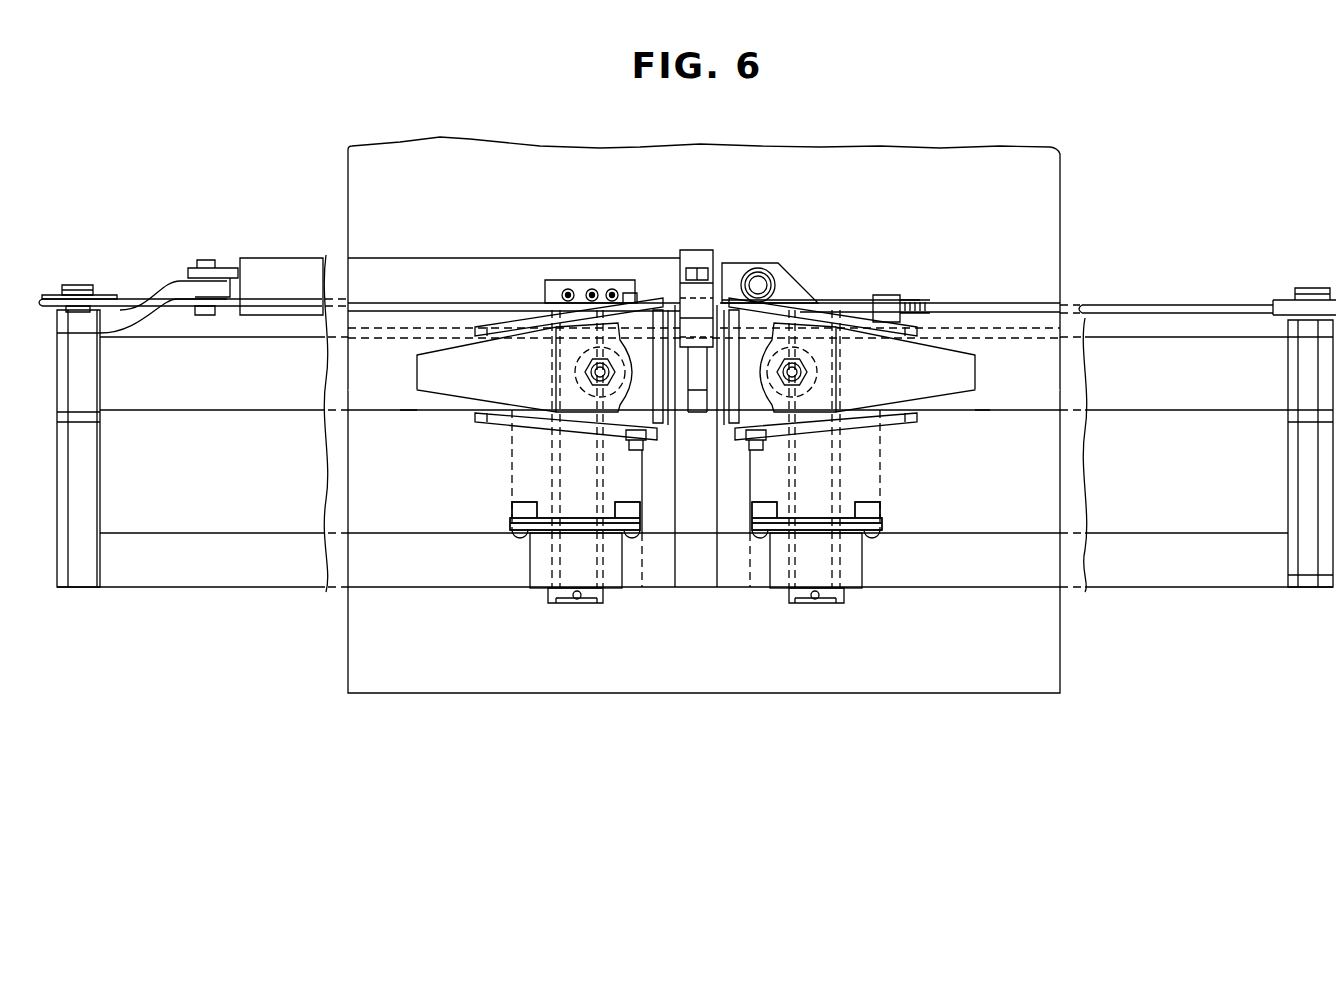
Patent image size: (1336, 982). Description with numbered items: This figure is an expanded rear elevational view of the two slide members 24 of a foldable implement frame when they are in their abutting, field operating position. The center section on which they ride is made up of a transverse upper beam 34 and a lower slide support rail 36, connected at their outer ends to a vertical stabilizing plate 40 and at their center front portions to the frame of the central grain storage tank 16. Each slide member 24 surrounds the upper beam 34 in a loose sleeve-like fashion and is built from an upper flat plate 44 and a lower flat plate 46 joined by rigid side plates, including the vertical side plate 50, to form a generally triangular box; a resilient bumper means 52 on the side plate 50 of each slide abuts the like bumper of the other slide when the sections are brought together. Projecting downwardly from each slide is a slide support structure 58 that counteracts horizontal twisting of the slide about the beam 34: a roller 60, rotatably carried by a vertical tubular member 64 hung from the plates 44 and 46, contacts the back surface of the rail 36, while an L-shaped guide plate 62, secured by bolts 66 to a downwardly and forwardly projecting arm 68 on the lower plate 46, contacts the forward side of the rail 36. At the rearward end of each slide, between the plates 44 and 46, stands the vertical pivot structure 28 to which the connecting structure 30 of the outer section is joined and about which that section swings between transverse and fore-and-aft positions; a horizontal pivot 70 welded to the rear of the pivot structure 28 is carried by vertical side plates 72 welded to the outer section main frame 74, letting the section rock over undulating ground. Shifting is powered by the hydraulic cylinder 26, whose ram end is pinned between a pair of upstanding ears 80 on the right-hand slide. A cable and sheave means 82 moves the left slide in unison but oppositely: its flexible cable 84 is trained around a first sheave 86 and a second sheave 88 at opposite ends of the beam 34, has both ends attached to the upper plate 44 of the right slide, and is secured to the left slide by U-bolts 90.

The central grain storage tank 16 is at (1025, 165).
The slide member 24 is at (515, 285).
The hydraulic cylinder 26 is at (270, 278).
The vertical pivot structure 28 is at (645, 390).
The connecting structure 30 is at (709, 430).
The transverse upper beam 34 is at (224, 392).
The lower slide support rail 36 is at (1166, 575).
The vertical stabilizing plate 40 is at (87, 570).
The upper flat plate 44 is at (487, 330).
The lower flat plate 46 is at (480, 424).
The vertical side plate 50 is at (655, 425).
The resilient bumper means 52 is at (706, 385).
The slide support structure 58 is at (693, 594).
The roller 60 is at (540, 577).
The L-shaped guide plate 62 is at (512, 513).
The vertical tubular member 64 is at (600, 602).
The bolts 66 is at (520, 537).
The arm 68 is at (625, 493).
The horizontal pivot 70 is at (590, 372).
The vertical side plates 72 is at (449, 382).
The outer section main frame 74 is at (410, 392).
The upstanding ears 80 is at (778, 278).
The cable and sheave means 82 is at (62, 255).
The flexible cable 84 is at (128, 303).
The first sheave 86 is at (105, 296).
The second sheave 88 is at (1283, 300).
The U-bolts 90 is at (612, 289).